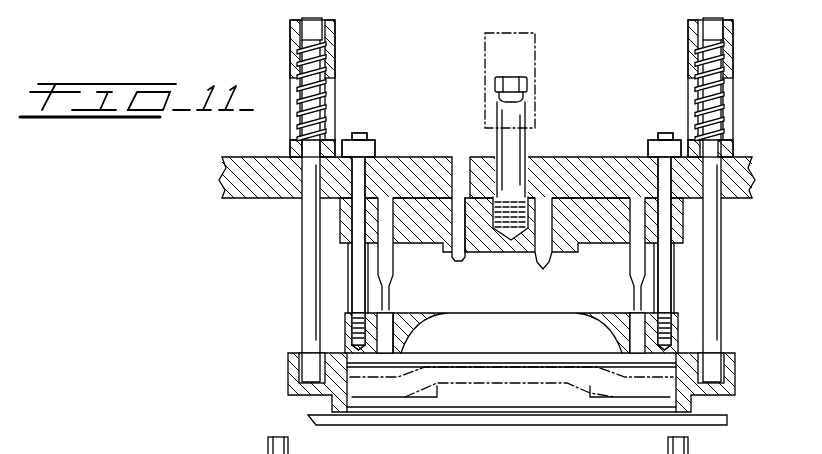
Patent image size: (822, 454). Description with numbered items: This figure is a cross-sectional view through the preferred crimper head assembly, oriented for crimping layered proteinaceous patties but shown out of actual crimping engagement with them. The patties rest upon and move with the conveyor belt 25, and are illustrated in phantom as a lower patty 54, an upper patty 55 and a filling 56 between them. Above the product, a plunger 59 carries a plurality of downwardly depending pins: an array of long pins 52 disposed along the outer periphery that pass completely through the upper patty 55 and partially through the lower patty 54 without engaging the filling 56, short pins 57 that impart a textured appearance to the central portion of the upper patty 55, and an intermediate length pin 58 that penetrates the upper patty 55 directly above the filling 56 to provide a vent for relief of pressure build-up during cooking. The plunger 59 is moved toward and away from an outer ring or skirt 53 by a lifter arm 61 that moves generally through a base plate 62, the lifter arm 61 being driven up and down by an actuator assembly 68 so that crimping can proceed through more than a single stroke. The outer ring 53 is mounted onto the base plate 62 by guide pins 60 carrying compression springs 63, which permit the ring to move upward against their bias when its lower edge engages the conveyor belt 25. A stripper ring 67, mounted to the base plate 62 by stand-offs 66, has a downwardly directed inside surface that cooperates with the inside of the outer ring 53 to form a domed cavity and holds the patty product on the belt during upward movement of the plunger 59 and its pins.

The conveyor belt 25 is at (712, 424).
The long pins 52 is at (396, 272).
The outer ring 53 is at (732, 383).
The lower patty 54 is at (430, 398).
The upper patty 55 is at (372, 387).
The filling 56 is at (510, 388).
The short pins 57 is at (455, 195).
The intermediate length pins 58 is at (546, 256).
The plunger 59 is at (596, 210).
The guide pins 60 is at (313, 285).
The lifter arm 61 is at (513, 143).
The base plate 62 is at (410, 173).
The compression springs 63 is at (302, 50).
The stand-offs 66 is at (358, 254).
The stripper ring 67 is at (483, 332).
The actuator assembly 68 is at (525, 61).